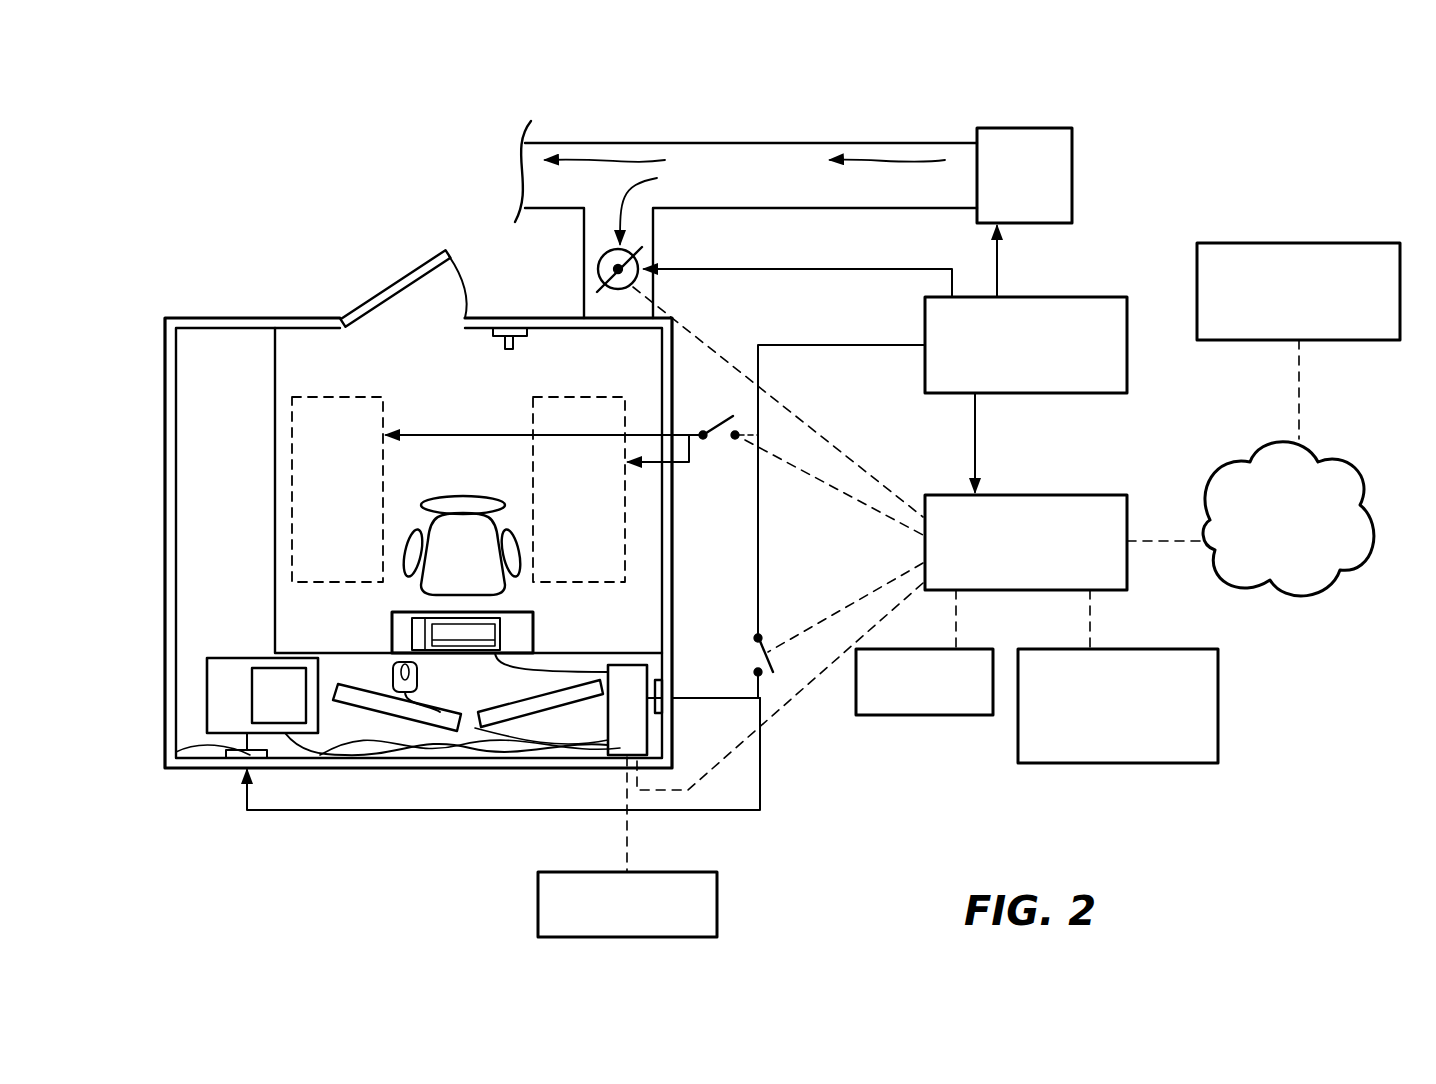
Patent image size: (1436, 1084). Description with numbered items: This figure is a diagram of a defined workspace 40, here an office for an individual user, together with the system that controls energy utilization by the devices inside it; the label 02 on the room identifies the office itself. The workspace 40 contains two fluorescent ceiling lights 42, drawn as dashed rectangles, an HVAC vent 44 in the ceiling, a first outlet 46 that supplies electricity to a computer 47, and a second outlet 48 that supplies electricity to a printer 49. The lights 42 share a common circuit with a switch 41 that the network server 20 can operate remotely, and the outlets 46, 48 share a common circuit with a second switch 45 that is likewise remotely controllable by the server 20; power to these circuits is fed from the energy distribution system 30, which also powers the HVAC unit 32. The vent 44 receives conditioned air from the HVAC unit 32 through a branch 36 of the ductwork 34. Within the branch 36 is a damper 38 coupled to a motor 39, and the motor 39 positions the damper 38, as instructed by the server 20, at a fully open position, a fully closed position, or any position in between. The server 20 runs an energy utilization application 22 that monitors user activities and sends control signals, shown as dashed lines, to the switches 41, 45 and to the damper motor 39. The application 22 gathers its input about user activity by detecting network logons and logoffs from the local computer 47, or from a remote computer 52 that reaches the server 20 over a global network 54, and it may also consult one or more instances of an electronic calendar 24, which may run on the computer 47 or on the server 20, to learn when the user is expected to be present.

The room 02 is at (197, 352).
The network server 20 is at (1095, 495).
The energy utilization application 22 is at (1175, 649).
The electronic calendar 24 is at (917, 718).
The energy distribution system 30 is at (1095, 297).
The HVAC unit 32 is at (1047, 128).
The ductwork 34 is at (775, 143).
The branch 36 is at (654, 225).
The damper 38 is at (600, 290).
The motor 39 is at (601, 253).
The defined workspace 40 is at (325, 244).
The switch 41 is at (717, 428).
The fluorescent ceiling lights 42 is at (368, 397).
The HVAC vent 44 is at (585, 328).
The switch 45 is at (773, 637).
The first outlet 46 is at (662, 678).
The computer 47 is at (633, 664).
The second outlet 48 is at (228, 750).
The printer 49 is at (228, 657).
The remote computer 52 is at (1352, 243).
The global network 54 is at (1340, 465).